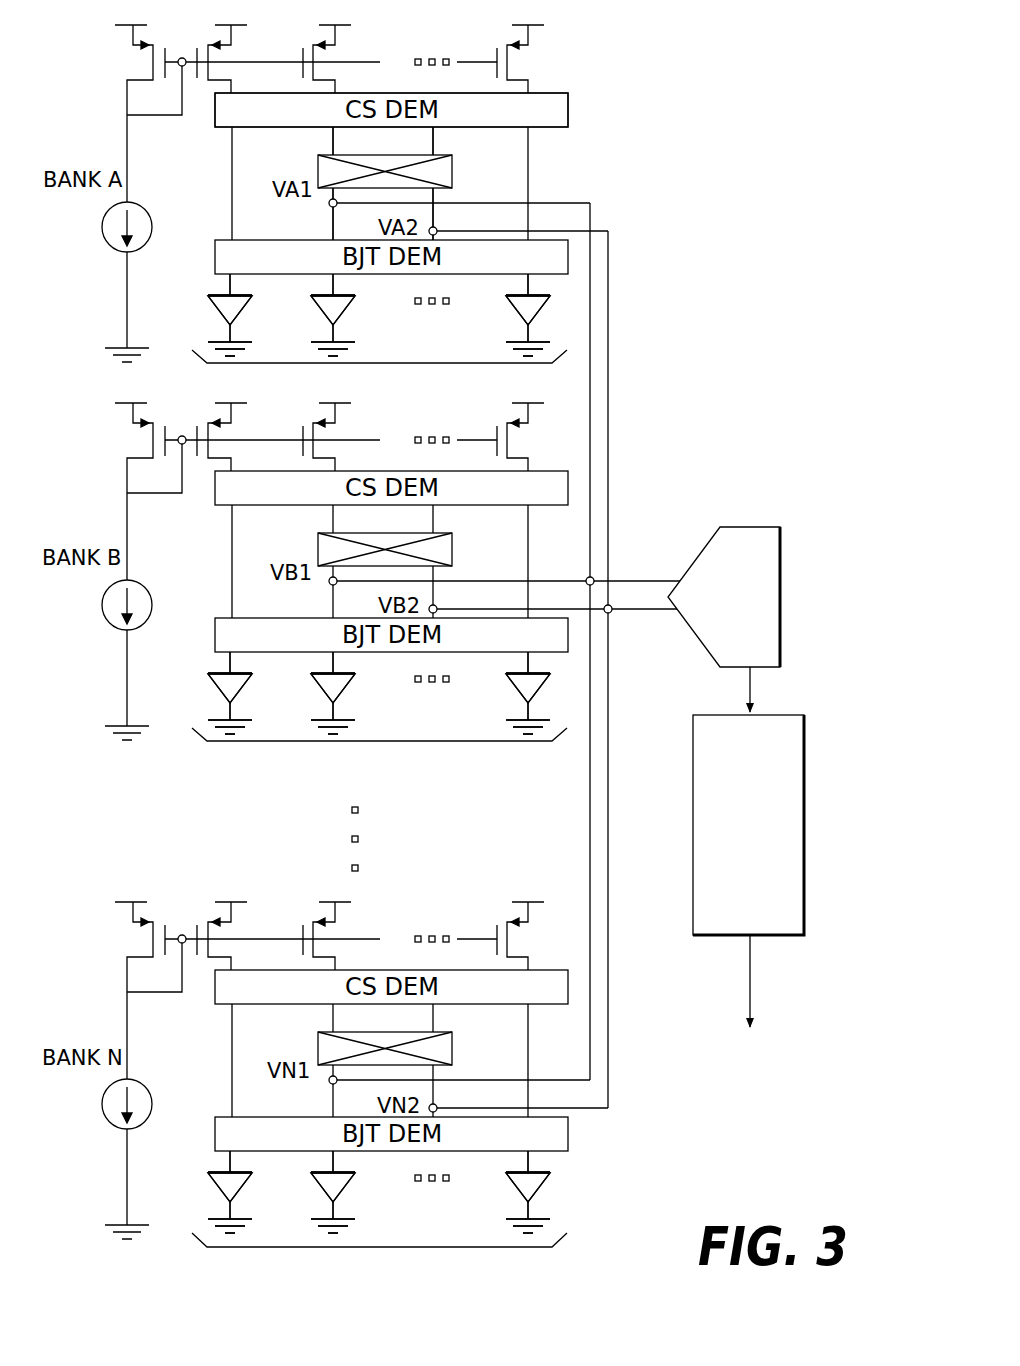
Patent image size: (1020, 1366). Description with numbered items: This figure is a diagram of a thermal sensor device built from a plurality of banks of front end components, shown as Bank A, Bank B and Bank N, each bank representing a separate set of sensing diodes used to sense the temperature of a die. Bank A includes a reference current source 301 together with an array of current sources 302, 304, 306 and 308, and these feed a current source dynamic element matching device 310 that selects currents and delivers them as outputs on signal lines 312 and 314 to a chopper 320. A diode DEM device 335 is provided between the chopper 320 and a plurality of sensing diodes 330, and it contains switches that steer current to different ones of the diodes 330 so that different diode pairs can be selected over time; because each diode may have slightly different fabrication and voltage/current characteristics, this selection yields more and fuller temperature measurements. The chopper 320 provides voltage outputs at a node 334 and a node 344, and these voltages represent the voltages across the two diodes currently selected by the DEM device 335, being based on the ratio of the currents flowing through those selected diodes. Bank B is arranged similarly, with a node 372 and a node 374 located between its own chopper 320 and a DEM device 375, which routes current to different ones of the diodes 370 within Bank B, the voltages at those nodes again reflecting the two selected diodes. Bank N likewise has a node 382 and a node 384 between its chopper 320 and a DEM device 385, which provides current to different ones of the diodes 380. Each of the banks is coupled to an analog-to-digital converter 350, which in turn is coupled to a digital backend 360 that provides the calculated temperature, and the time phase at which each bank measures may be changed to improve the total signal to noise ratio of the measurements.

The reference current source 301 is at (152, 216).
The current source 302 is at (152, 31).
The current source 304 is at (250, 31).
The current source 306 is at (364, 34).
The current source 308 is at (558, 33).
The current source dynamic element matching device 310 is at (545, 110).
The signal line 312 is at (331, 140).
The signal line 314 is at (436, 140).
The chopper 320 is at (452, 170).
The sensing diodes 330 is at (390, 363).
The node 334 is at (329, 206).
The diode DEM device 335 is at (543, 262).
The node 344 is at (437, 229).
The analog-to-digital converter 350 is at (782, 669).
The digital backend 360 is at (785, 935).
The diodes 370 is at (390, 741).
The node 372 is at (329, 584).
The node 374 is at (437, 606).
The DEM device 375 is at (543, 636).
The diodes 380 is at (390, 1247).
The node 382 is at (329, 1083).
The node 384 is at (437, 1105).
The DEM device 385 is at (543, 1140).